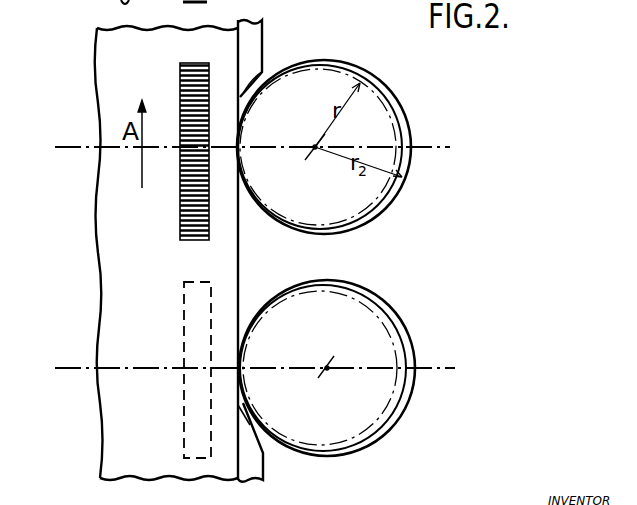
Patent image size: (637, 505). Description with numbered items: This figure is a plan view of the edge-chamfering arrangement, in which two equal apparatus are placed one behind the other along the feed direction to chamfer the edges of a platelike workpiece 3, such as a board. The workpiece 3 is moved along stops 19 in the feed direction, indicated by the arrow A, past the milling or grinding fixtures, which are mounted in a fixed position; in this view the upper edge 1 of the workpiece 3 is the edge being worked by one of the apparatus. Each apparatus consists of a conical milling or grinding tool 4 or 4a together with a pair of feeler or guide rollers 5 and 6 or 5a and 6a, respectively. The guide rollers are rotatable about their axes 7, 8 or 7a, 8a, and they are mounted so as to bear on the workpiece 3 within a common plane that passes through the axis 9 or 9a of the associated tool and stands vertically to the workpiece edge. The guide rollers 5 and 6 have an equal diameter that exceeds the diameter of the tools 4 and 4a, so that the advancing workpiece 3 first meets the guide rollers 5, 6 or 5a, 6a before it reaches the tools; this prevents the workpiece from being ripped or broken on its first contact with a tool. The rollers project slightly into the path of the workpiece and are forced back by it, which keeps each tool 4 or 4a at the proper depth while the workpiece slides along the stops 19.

The upper edge 1 is at (237, 63).
The workpiece 3 is at (238, 258).
The conical milling or grinding tool 4 is at (382, 315).
The conical milling or grinding tool 4a is at (382, 202).
The guide roller 5 is at (410, 342).
The guide roller 5a is at (387, 88).
The guide roller 6 is at (196, 418).
The guide roller 6a is at (190, 83).
The axis 7 is at (327, 367).
The axis 7a is at (323, 147).
The axis 8 is at (135, 368).
The axis 8a is at (154, 148).
The tool axis 9 is at (322, 368).
The tool axis 9a is at (313, 150).
The stops 19 is at (252, 38).